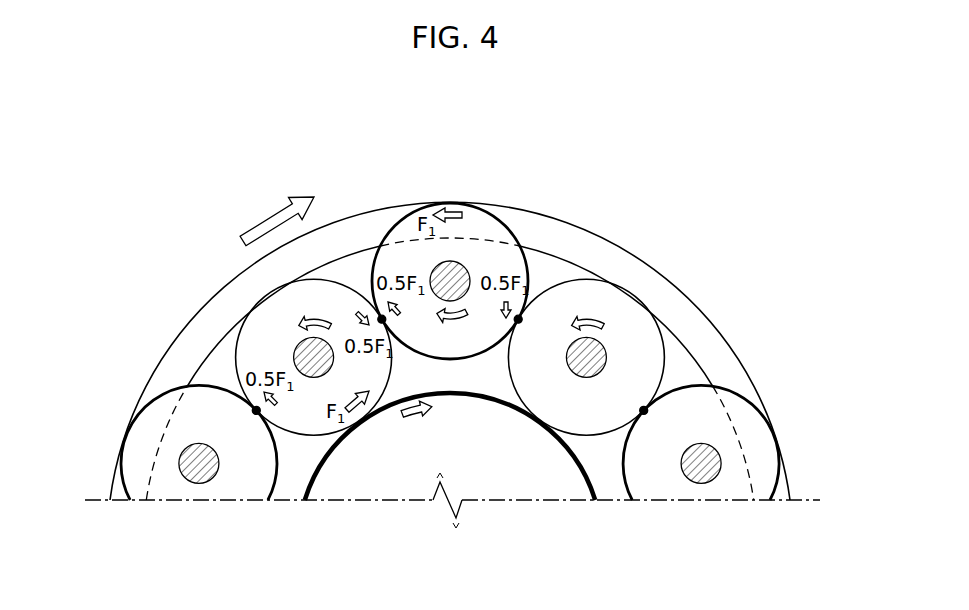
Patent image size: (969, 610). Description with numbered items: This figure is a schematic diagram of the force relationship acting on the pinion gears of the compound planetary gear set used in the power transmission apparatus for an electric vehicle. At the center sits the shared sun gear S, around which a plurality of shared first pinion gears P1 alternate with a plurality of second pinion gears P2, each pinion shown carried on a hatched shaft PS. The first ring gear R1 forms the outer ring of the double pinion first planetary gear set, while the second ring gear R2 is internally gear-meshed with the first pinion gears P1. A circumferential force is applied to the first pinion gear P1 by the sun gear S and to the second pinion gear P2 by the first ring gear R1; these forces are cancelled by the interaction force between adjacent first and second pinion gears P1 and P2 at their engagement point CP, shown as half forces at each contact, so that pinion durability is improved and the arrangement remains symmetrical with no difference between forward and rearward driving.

The first ring gear R1 is at (640, 257).
The second ring gear R2 is at (582, 268).
The shared sun gear S is at (516, 478).
The first pinion gear P1 is at (248, 340).
The second pinion gear P2 is at (485, 221).
The planet shaft PS is at (434, 273).
The engagement point CP is at (374, 314).